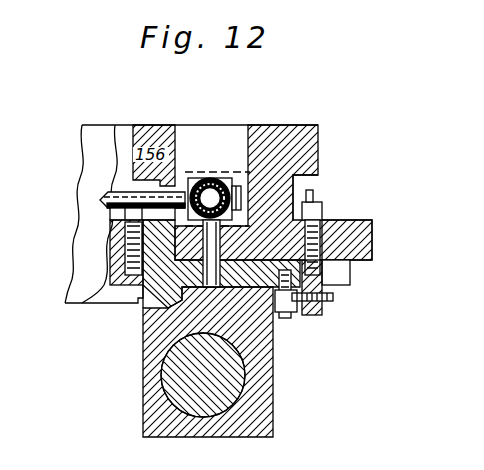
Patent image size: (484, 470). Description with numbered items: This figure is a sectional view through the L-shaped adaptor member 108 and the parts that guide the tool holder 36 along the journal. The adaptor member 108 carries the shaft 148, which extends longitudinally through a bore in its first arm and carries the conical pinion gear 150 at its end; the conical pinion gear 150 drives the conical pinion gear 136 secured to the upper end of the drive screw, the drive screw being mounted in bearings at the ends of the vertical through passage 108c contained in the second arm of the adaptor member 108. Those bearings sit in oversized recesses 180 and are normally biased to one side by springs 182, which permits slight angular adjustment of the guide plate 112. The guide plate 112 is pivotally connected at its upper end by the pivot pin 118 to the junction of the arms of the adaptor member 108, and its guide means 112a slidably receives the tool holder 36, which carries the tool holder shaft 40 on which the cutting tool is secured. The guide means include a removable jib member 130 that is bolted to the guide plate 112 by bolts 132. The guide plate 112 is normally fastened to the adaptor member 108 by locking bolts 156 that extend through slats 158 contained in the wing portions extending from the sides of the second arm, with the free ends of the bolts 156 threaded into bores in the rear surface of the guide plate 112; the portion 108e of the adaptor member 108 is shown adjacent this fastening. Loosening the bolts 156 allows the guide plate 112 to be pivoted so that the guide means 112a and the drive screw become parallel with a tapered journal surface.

The tool holder 36 is at (273, 384).
The tool holder shaft 40 is at (226, 392).
The L-shaped adaptor member 108 is at (322, 152).
The vertical through passage 108c is at (241, 112).
The housing flange 108e is at (372, 236).
The guide plate 112 is at (350, 272).
The guide means 112a is at (152, 304).
The pivot pin 118 is at (212, 287).
The removable jib member 130 is at (233, 342).
The bolts 132 is at (292, 306).
The conical pinion gear 136 is at (214, 180).
The shaft 148 is at (100, 198).
The conical pinion gear 150 is at (187, 180).
The bolts 156 is at (138, 212).
The slats 158 is at (126, 238).
The oversized recesses 180 is at (269, 125).
The springs 182 is at (240, 198).